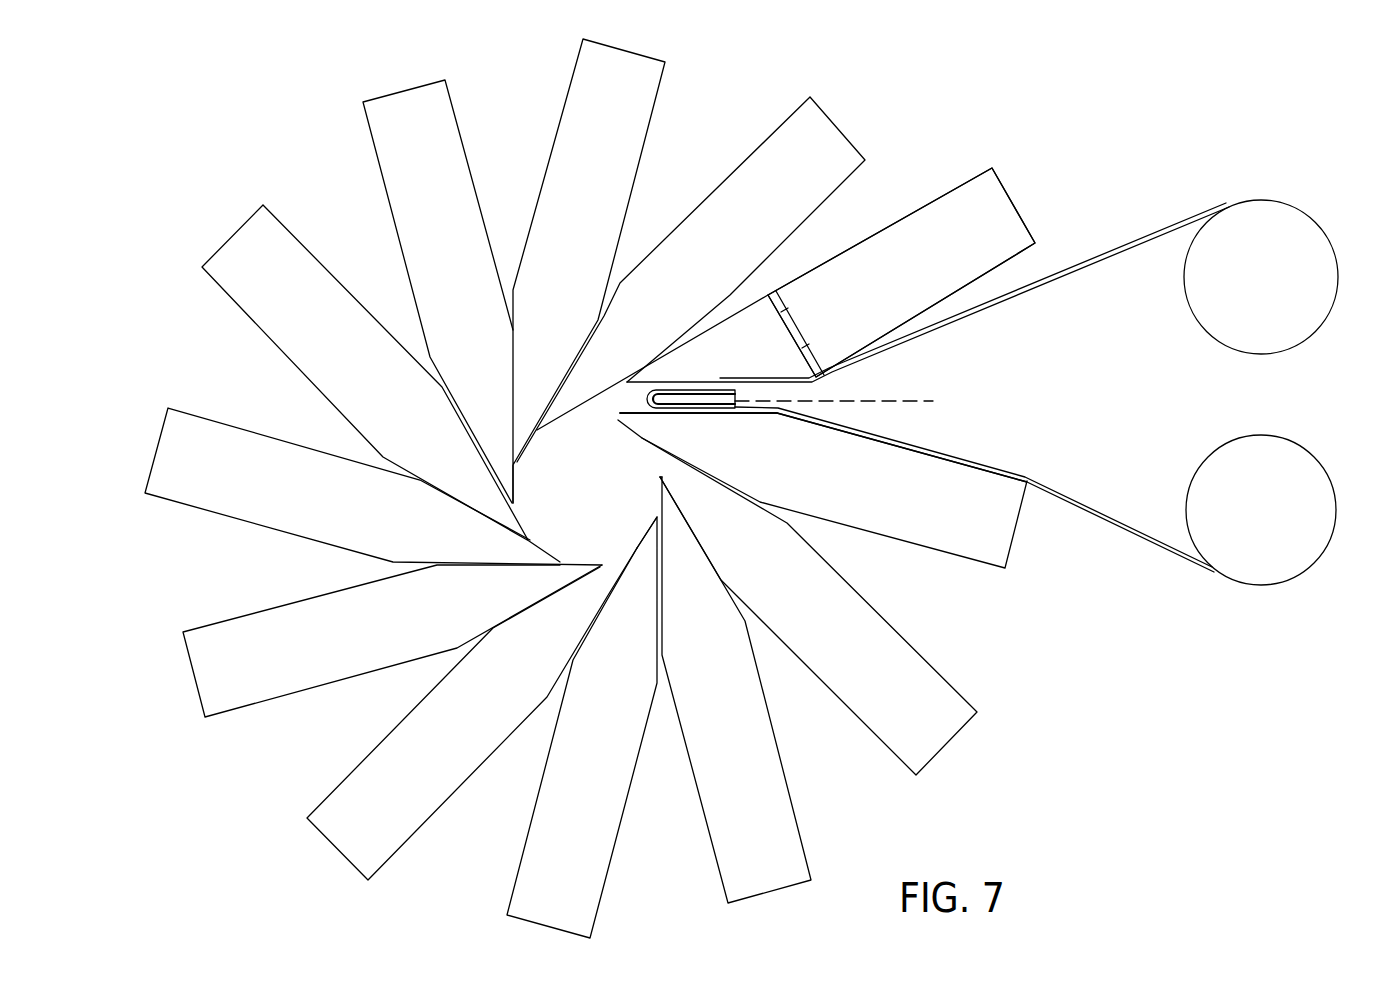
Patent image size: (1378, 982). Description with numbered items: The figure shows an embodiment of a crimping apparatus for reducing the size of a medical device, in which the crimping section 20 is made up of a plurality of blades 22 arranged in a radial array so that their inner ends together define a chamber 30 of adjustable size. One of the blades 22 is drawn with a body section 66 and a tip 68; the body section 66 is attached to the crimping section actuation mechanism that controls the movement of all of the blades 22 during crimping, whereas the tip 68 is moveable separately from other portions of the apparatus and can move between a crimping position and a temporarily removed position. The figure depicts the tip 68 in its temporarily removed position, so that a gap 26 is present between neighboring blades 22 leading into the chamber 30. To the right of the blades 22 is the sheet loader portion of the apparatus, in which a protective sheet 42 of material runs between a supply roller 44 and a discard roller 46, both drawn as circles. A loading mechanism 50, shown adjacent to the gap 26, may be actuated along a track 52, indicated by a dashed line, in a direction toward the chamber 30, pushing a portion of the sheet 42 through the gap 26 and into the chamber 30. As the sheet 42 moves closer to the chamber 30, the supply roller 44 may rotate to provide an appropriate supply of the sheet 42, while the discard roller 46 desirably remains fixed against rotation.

The crimping section 20 is at (200, 804).
The blade 22 is at (650, 90).
The gap 26 is at (638, 408).
The chamber 30 is at (570, 538).
The protective sheet 42 is at (1025, 303).
The supply roller 44 is at (1316, 560).
The discard roller 46 is at (1290, 215).
The loading mechanism 50 is at (718, 396).
The track 52 is at (912, 400).
The body section 66 is at (908, 228).
The tip 68 is at (748, 318).